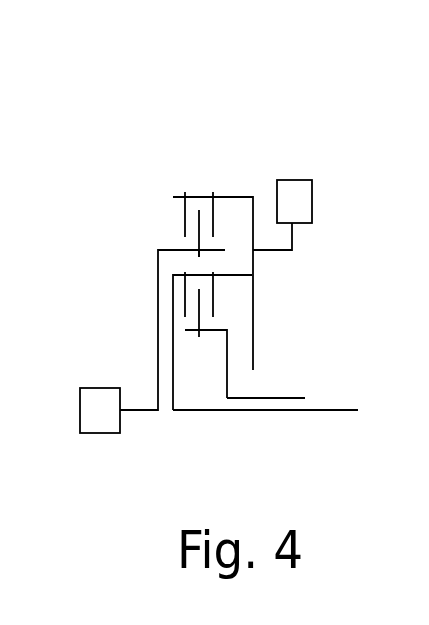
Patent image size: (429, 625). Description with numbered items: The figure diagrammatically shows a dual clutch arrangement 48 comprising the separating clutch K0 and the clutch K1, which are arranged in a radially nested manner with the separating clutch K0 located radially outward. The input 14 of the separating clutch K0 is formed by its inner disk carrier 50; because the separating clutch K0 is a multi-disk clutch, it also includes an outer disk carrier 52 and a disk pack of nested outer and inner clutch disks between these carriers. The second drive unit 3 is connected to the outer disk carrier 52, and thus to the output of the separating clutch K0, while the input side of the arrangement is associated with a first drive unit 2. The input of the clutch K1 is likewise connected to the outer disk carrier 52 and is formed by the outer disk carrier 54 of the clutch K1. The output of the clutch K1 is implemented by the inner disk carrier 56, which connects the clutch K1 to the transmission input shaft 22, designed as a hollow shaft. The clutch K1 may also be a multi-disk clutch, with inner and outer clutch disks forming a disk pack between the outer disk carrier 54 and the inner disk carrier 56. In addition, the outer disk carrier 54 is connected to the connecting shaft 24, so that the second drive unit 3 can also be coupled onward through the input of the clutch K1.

The internal combustion engine 2 is at (78, 412).
The second drive unit 3 is at (298, 179).
The input 14 is at (172, 250).
The transmission input shaft 22 is at (300, 396).
The connecting shaft 24 is at (342, 411).
The clutch arrangement 48 is at (197, 142).
The inner disk carrier 50 is at (220, 253).
The outer disk carrier 52 is at (232, 196).
The outer disk carrier 54 is at (230, 277).
The inner disk carrier 56 is at (227, 375).
The separating clutch K0 is at (147, 212).
The clutch K1 is at (135, 297).